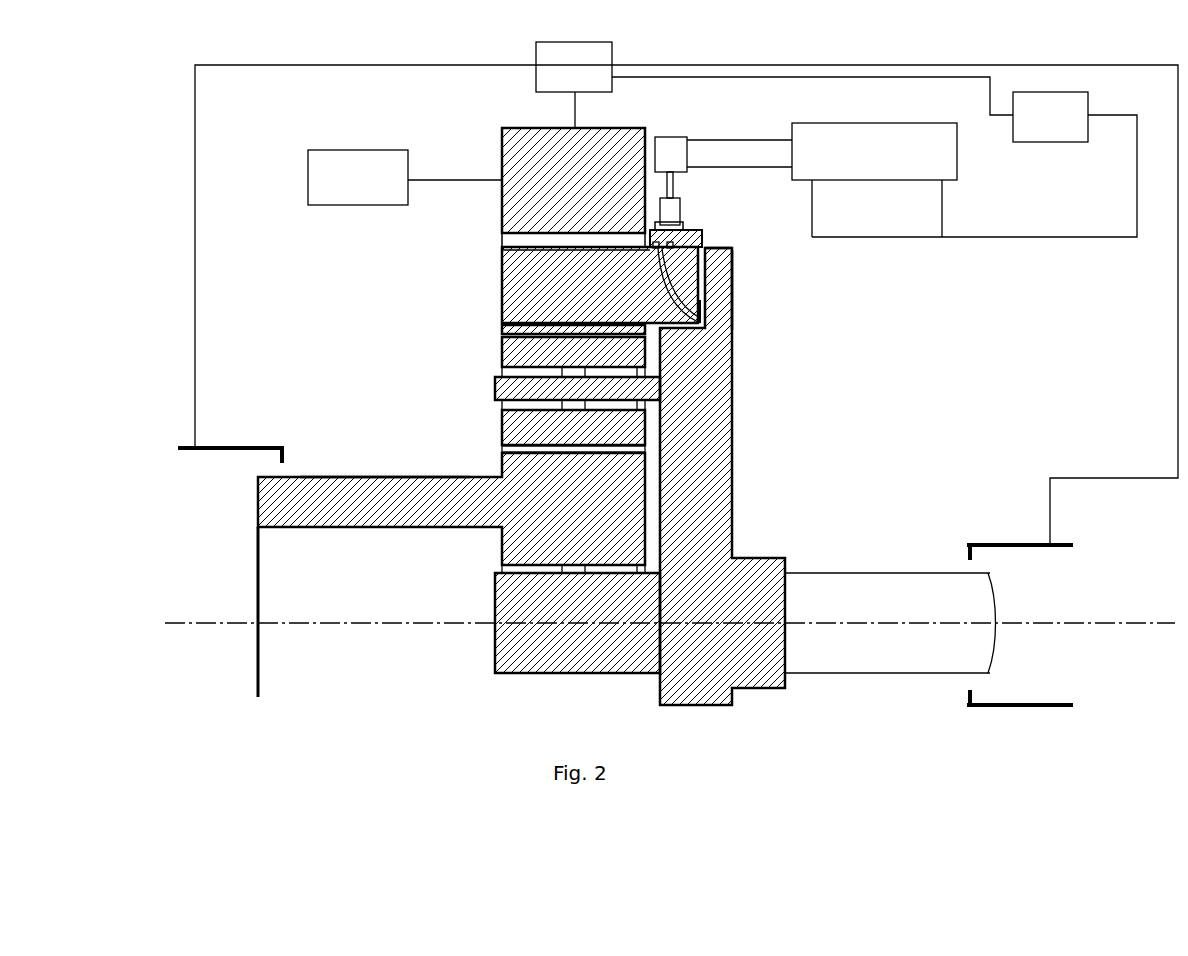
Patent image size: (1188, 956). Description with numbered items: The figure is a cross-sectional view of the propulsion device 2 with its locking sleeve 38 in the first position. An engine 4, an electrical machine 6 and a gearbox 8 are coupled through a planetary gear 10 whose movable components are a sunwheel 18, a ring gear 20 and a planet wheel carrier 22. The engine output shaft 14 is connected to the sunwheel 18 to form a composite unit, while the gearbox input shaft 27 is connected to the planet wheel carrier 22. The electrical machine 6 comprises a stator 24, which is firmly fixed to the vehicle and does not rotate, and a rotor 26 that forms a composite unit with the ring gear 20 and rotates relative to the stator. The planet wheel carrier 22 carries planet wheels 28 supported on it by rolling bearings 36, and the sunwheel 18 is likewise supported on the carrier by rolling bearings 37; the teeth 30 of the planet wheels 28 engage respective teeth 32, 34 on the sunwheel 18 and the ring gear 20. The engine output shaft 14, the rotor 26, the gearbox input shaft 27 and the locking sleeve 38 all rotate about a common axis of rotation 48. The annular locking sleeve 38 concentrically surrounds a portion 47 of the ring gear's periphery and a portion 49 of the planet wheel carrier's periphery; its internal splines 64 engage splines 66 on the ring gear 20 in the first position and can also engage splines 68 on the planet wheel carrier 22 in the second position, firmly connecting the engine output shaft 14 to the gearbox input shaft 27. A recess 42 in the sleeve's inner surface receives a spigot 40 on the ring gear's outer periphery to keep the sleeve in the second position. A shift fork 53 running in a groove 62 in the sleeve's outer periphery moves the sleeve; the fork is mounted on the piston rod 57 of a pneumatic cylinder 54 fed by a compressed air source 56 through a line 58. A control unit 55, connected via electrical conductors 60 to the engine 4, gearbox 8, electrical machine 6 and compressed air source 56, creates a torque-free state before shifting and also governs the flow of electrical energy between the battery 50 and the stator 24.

The propulsion device 2 is at (968, 343).
The engine 4 is at (178, 448).
The electrical machine 6 is at (480, 112).
The gearbox 8 is at (985, 545).
The planetary gear 10 is at (848, 358).
The engine output shaft 14 is at (330, 477).
The sunwheel 18 is at (330, 527).
The ring gear 20 is at (502, 285).
The planet wheel carrier 22 is at (735, 480).
The stator 24 is at (620, 128).
The rotor 26 is at (502, 250).
The gearbox input shaft 27 is at (990, 650).
The planet wheels 28 is at (502, 352).
The teeth of the planet wheels 30 is at (502, 333).
The teeth on the sunwheel 32 is at (502, 428).
The teeth on the ring gear 34 is at (502, 326).
The rolling bearings 36 is at (495, 390).
The rolling bearings 37 is at (502, 570).
The locking sleeve 38 is at (700, 240).
The spigot 40 is at (702, 300).
The recess 42 is at (645, 240).
The portion of the ring gear's periphery 47 is at (705, 318).
The common axis of rotation 48 is at (232, 622).
The portion of the planet wheel carrier's periphery 49 is at (735, 262).
The battery 50 is at (308, 165).
The shift fork 53 is at (680, 212).
The pneumatic cylinder 54 is at (957, 160).
The control unit 55 is at (612, 50).
The compressed air source 56 is at (1068, 92).
The piston rod 57 is at (770, 140).
The line 58 is at (1095, 237).
The electrical conductors 60 is at (380, 65).
The groove 62 is at (690, 232).
The splines of the locking sleeve 64 is at (705, 246).
The splines on the ring gear 66 is at (700, 272).
The splines on the planet wheel carrier 68 is at (720, 250).